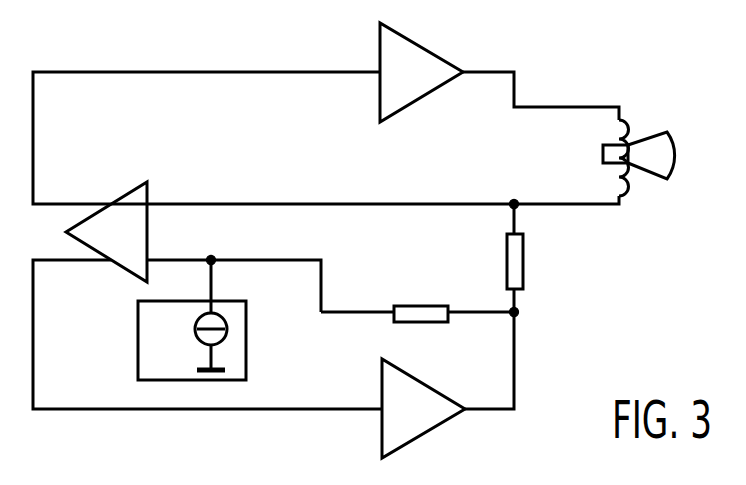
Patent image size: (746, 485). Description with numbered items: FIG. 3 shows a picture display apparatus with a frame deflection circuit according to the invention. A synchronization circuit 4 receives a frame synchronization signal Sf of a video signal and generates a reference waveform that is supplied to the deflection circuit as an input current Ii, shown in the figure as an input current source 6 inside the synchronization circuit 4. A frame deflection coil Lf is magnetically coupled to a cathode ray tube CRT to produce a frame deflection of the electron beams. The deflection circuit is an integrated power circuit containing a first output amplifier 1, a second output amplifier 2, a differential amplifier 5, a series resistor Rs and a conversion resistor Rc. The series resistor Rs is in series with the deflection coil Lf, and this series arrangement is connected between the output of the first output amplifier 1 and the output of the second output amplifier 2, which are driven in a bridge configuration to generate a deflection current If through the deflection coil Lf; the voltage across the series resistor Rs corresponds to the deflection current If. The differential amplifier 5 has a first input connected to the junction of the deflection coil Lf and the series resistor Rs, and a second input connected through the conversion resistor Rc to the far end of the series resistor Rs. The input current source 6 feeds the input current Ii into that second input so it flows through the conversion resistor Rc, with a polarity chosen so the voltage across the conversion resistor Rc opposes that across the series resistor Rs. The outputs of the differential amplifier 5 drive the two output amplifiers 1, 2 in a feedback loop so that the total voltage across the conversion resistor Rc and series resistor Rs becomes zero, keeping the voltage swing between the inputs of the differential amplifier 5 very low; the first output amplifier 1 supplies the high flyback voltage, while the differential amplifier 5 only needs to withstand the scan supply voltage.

The first output amplifier 1 is at (386, 41).
The second output amplifier 2 is at (379, 377).
The synchronization circuit 4 is at (246, 367).
The differential amplifier 5 is at (133, 197).
The input current source 6 is at (196, 327).
The series resistor Rs is at (507, 252).
The conversion resistor Rc is at (411, 306).
The frame deflection coil Lf is at (623, 122).
The cathode ray tube CRT is at (665, 168).
The deflection current If is at (528, 60).
The frame synchronization signal Sf is at (127, 342).
The input current Ii is at (215, 277).